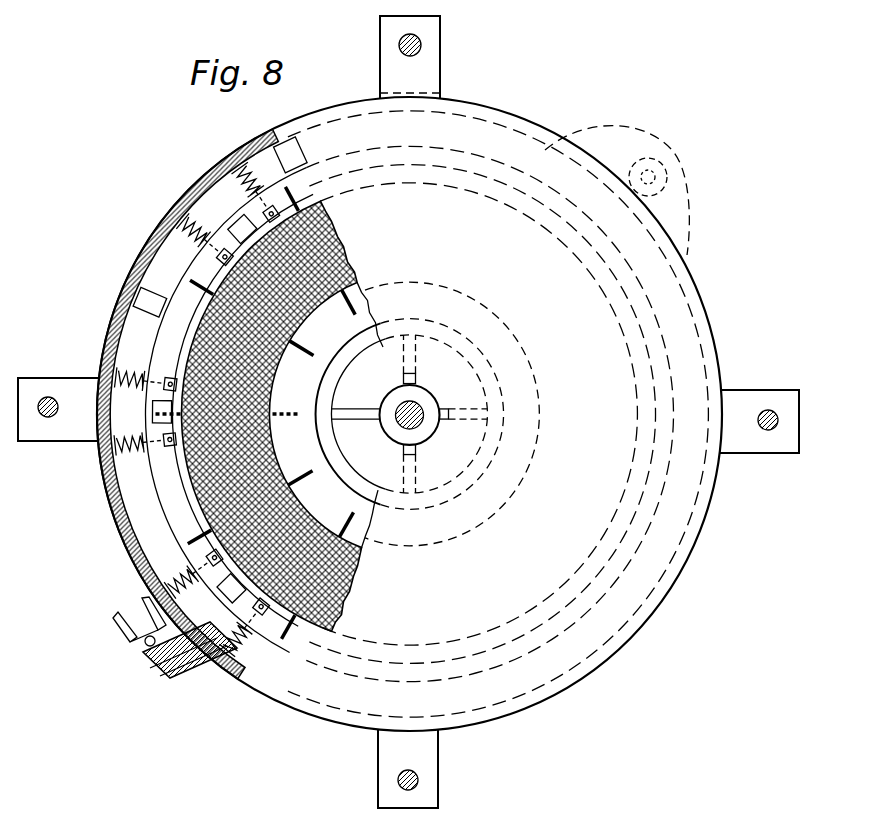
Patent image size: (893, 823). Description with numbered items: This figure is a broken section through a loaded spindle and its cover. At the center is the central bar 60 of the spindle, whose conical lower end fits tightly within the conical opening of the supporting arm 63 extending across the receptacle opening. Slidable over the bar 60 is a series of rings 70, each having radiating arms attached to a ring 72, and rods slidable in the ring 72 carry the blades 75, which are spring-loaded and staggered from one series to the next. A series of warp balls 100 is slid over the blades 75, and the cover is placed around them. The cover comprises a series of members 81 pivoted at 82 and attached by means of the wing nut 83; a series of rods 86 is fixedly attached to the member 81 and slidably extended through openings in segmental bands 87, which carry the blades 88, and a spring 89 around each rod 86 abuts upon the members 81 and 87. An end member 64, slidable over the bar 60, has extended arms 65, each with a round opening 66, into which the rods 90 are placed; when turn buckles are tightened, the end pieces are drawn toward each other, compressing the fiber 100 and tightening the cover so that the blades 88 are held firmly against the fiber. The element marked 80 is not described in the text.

The end member 64 is at (685, 572).
The extended arm 65 is at (73, 378).
The round opening 66 is at (48, 395).
The rod 90 is at (50, 418).
The pivot 82 is at (649, 172).
The cover member 81 is at (200, 183).
The anchor block 80 is at (230, 668).
The wing nut 83 is at (130, 616).
The warp ball 100 is at (340, 262).
The ring 72 is at (346, 362).
The central bar 60 is at (421, 404).
The ring 70 is at (423, 437).
The supporting arm 63 is at (360, 423).
The blade 75 is at (287, 411).
The blade 88 is at (200, 293).
The segmental band 87 is at (303, 175).
The rod 86 is at (237, 197).
The spring 89 is at (192, 244).